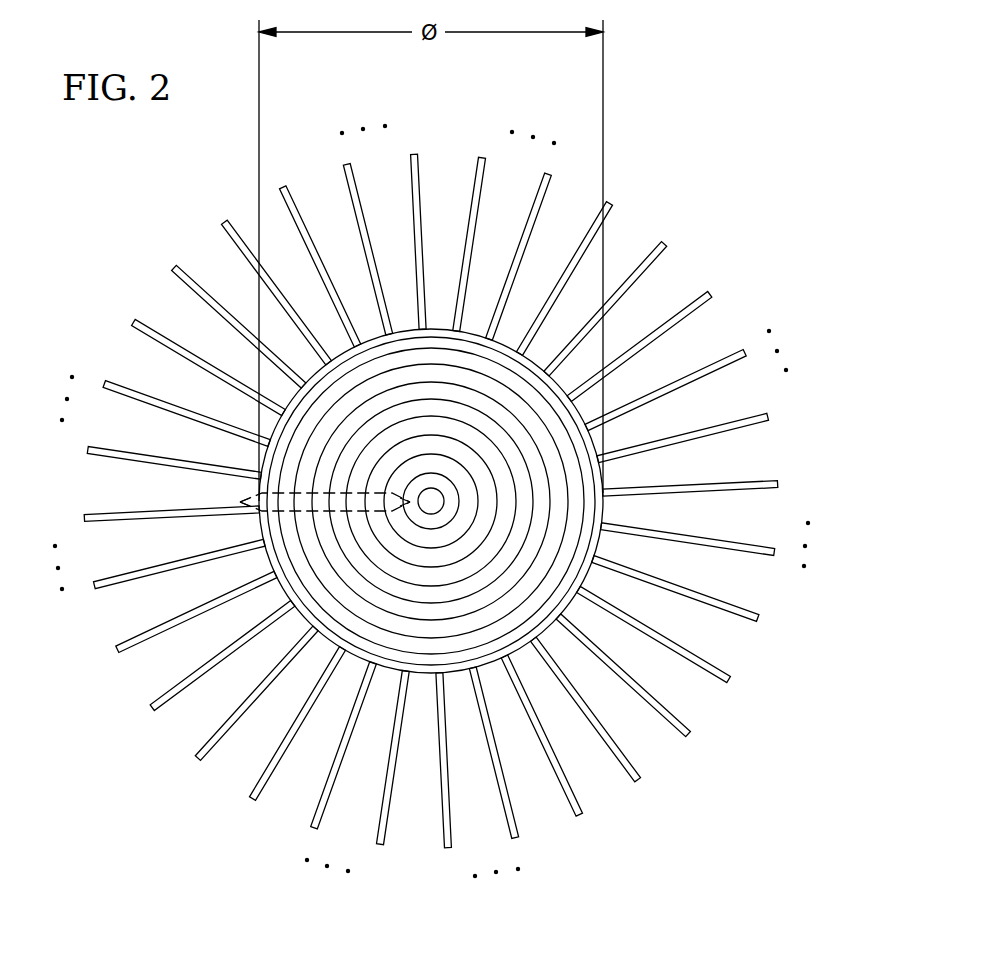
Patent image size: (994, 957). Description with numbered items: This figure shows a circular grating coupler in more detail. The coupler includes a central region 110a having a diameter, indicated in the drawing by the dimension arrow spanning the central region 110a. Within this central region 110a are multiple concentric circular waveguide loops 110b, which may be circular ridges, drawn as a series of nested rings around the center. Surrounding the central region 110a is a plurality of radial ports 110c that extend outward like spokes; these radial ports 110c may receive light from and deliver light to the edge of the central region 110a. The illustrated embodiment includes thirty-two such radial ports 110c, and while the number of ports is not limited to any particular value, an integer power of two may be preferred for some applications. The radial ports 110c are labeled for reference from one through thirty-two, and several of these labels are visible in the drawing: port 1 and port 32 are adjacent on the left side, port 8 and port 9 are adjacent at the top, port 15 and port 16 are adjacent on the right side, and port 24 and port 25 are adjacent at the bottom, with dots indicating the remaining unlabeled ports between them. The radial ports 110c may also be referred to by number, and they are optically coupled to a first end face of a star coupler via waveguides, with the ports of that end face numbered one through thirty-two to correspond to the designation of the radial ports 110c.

The radial port 1 is at (156, 459).
The radial port 8 is at (416, 222).
The radial port 9 is at (472, 224).
The radial port 15 is at (703, 429).
The radial port 16 is at (711, 488).
The radial port 24 is at (447, 782).
The radial port 25 is at (386, 779).
The radial port 32 is at (149, 518).
The central region 110a is at (343, 650).
The concentric circular waveguide loops 110b is at (243, 502).
The radial ports 110c is at (126, 389).